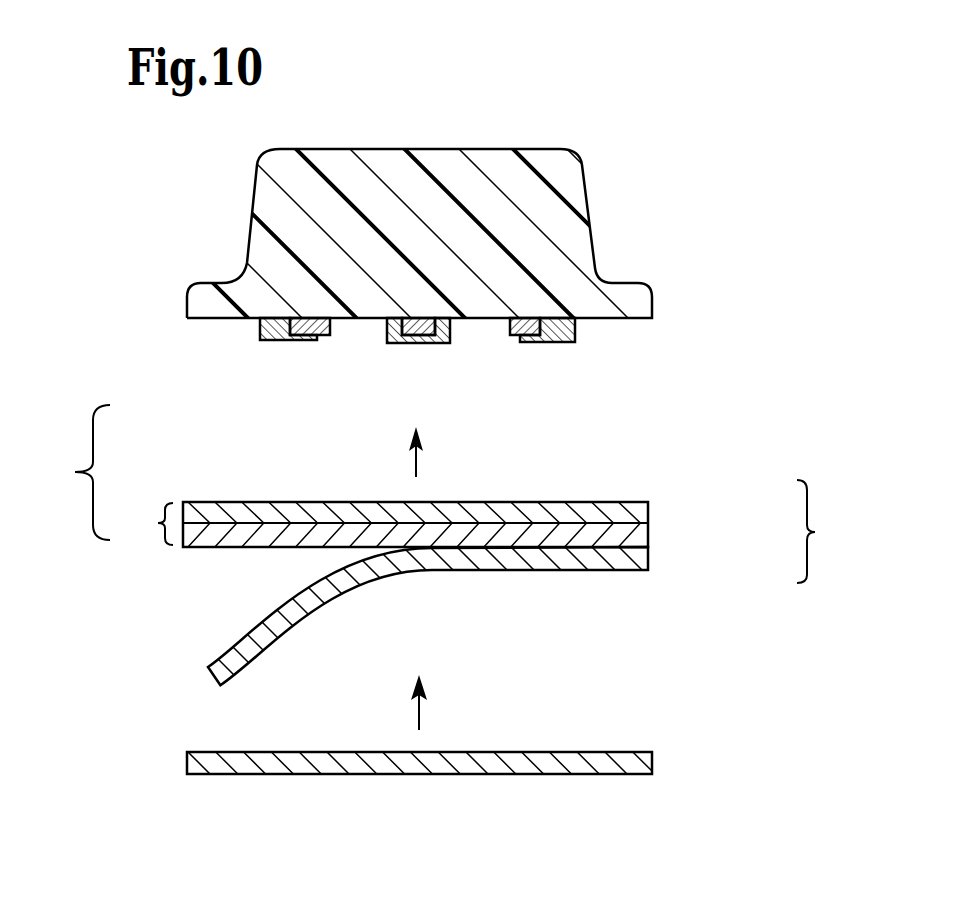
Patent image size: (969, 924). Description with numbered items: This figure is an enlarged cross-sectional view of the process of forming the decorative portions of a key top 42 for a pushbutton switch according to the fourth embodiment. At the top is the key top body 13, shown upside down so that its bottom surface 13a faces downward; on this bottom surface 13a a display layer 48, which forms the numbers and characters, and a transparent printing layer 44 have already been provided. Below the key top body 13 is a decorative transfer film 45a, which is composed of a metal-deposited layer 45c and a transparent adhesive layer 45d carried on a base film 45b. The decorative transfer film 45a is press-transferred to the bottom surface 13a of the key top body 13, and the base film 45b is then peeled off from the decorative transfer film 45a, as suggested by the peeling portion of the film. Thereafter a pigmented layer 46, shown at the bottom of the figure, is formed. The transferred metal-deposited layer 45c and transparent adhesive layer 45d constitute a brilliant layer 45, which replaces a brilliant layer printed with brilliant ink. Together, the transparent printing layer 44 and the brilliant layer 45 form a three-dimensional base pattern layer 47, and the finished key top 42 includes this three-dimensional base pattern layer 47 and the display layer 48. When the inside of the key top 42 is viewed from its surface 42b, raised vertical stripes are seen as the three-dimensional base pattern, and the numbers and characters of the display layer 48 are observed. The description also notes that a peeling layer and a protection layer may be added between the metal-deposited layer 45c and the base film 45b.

The key top 42 is at (416, 178).
The surface of the key top 42b is at (365, 149).
The key top body 13 is at (513, 149).
The bottom surface 13a is at (660, 318).
The transparent printing layer 44 is at (258, 326).
The display layer 48 is at (330, 343).
The three-dimensional base pattern layer 47 is at (75, 472).
The brilliant layer 45 is at (446, 509).
The decorative transfer film 45a is at (433, 547).
The base film 45b is at (650, 557).
The metal-deposited layer 45c is at (650, 533).
The transparent adhesive layer 45d is at (650, 508).
The pigmented layer 46 is at (653, 762).